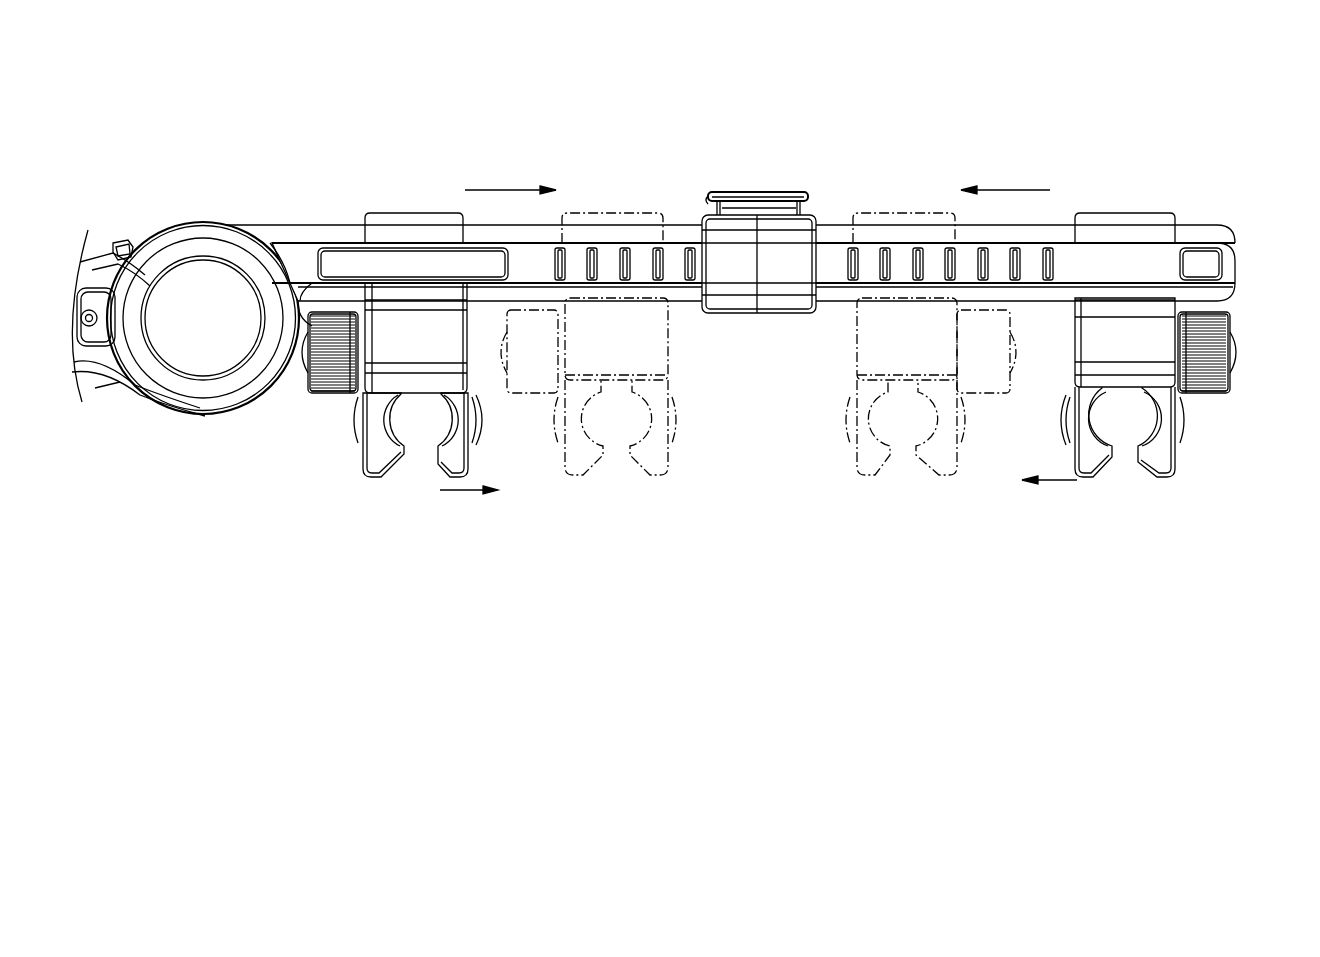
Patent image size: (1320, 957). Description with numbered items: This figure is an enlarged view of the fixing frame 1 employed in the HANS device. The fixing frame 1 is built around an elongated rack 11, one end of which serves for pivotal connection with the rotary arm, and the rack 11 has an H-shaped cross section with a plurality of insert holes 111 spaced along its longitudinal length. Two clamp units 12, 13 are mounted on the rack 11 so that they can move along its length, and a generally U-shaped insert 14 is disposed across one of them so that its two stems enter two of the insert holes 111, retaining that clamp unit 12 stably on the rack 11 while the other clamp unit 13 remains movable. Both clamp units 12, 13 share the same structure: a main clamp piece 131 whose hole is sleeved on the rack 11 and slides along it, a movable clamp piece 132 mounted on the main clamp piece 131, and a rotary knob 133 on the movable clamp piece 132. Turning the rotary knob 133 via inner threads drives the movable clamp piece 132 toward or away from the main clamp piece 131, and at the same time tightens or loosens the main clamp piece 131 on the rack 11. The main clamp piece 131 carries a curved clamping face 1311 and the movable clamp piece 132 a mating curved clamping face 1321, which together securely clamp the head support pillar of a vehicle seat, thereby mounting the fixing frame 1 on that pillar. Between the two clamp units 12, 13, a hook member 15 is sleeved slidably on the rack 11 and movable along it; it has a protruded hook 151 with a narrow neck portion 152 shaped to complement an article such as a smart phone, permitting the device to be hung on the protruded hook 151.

The fixing frame 1 is at (692, 350).
The rack 11 is at (1057, 228).
The insert holes 111 is at (545, 262).
The clamp unit 12 is at (415, 225).
The clamp unit 13 is at (1127, 225).
The main clamp piece 131 is at (1150, 352).
The curved clamping face 1311 is at (1126, 440).
The movable clamp piece 132 is at (1090, 470).
The mating curved clamping face 1321 is at (1108, 462).
The rotary knob 133 is at (1212, 393).
The U-shaped insert 14 is at (360, 265).
The hook member 15 is at (787, 240).
The protruded hook 151 is at (757, 210).
The narrow neck portion 152 is at (712, 213).